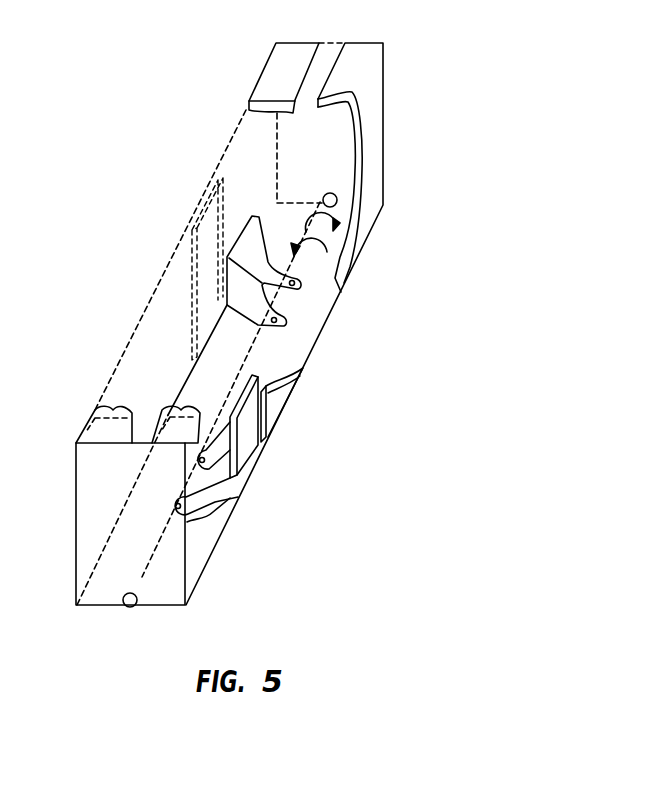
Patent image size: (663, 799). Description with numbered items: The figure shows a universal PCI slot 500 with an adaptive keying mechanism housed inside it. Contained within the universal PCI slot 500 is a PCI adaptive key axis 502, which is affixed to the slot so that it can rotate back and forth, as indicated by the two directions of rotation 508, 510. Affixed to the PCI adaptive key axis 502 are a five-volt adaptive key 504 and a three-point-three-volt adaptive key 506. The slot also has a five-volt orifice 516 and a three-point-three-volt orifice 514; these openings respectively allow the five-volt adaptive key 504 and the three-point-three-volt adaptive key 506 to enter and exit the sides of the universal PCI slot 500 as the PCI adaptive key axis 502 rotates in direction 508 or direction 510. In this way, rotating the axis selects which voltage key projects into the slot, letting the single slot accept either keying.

The universal PCI slot 500 is at (116, 396).
The PCI adaptive key axis 502 is at (142, 577).
The 5V adaptive key 504 is at (255, 250).
The 3.3V adaptive key 506 is at (248, 438).
The direction of rotation 508 is at (327, 215).
The direction of rotation 510 is at (312, 240).
The 3.3V orifice 514 is at (270, 400).
The 5V orifice 516 is at (198, 262).